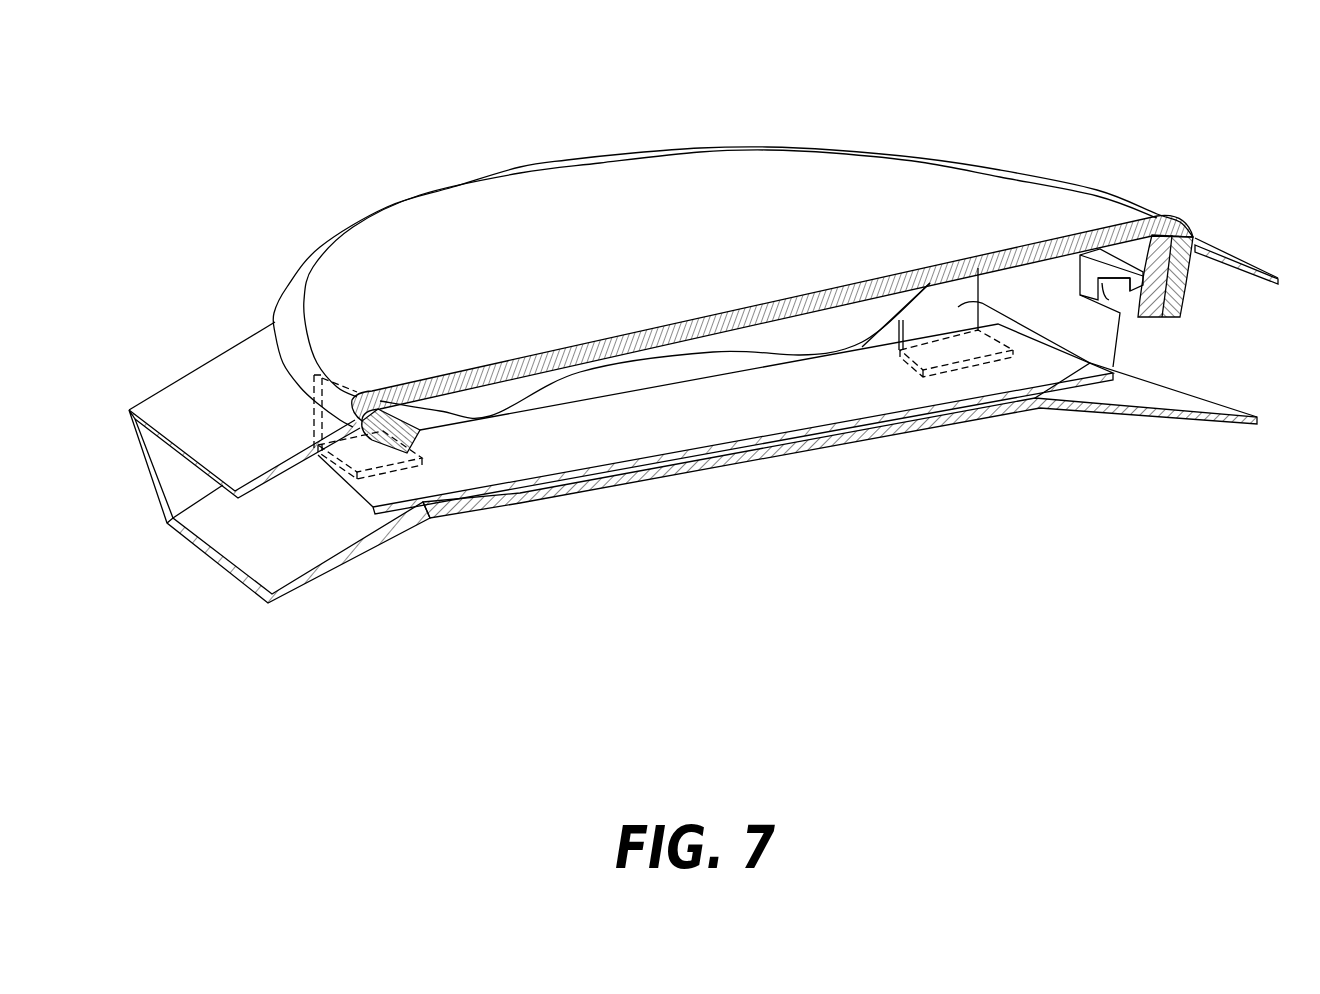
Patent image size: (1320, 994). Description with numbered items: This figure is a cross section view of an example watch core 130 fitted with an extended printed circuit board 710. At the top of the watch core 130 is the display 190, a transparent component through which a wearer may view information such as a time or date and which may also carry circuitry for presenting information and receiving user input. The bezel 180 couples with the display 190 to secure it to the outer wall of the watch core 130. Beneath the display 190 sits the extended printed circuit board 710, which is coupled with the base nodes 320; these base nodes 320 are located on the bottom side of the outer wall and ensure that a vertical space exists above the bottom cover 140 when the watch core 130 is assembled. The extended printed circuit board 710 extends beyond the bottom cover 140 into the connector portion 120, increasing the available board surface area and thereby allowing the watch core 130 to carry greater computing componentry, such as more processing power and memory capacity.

The watch core 130 is at (291, 120).
The connector portion 120 is at (192, 401).
The bezel 180 is at (290, 310).
The display 190 is at (538, 202).
The extended printed circuit board 710 is at (880, 396).
The bottom cover 140 is at (893, 428).
The base nodes 320 is at (1120, 362).